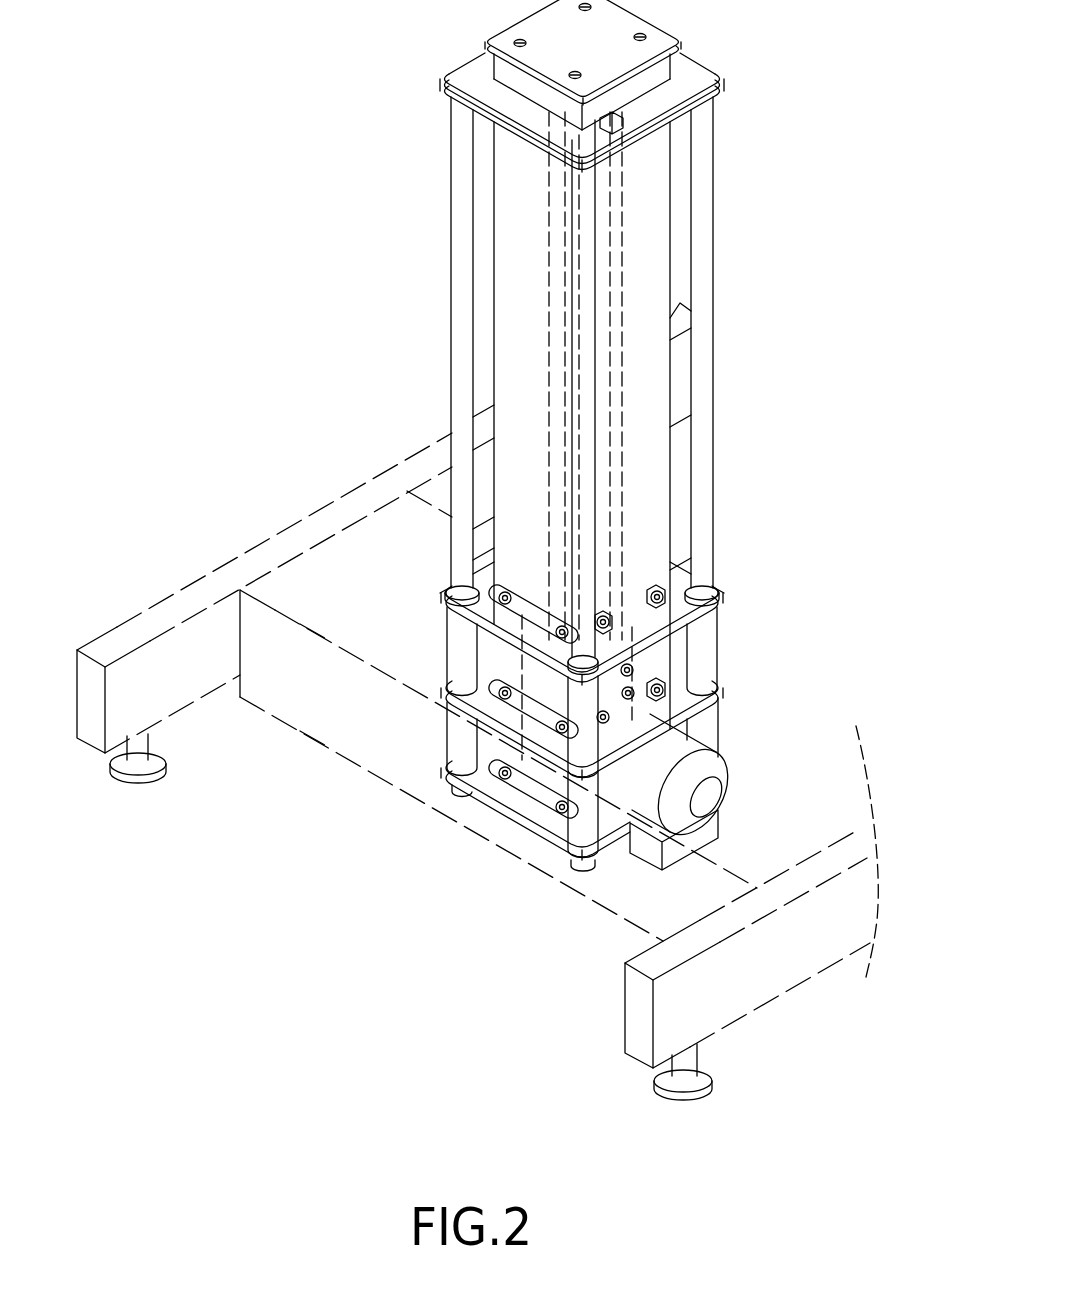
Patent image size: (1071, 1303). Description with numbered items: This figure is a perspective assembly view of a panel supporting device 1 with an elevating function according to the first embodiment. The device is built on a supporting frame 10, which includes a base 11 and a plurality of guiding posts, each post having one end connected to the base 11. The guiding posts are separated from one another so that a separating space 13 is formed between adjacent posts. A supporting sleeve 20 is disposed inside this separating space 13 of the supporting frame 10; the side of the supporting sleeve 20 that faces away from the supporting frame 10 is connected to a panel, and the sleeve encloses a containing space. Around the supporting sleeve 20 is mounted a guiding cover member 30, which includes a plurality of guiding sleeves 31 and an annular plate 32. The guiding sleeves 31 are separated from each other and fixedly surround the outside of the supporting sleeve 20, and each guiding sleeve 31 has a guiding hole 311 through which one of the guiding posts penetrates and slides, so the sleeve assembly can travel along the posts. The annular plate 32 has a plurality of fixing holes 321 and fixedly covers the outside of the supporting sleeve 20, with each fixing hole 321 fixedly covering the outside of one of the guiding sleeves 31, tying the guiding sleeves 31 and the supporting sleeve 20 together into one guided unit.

The panel supporting device 1 is at (264, 80).
The supporting frame 10 is at (357, 763).
The base 11 is at (332, 720).
The separating space 13 is at (482, 295).
The supporting sleeve 20 is at (668, 247).
The guiding cover member 30 is at (722, 654).
The guiding sleeves 31 is at (705, 633).
The guiding hole 311 is at (719, 586).
The annular plate 32 is at (643, 632).
The fixing holes 321 is at (721, 606).